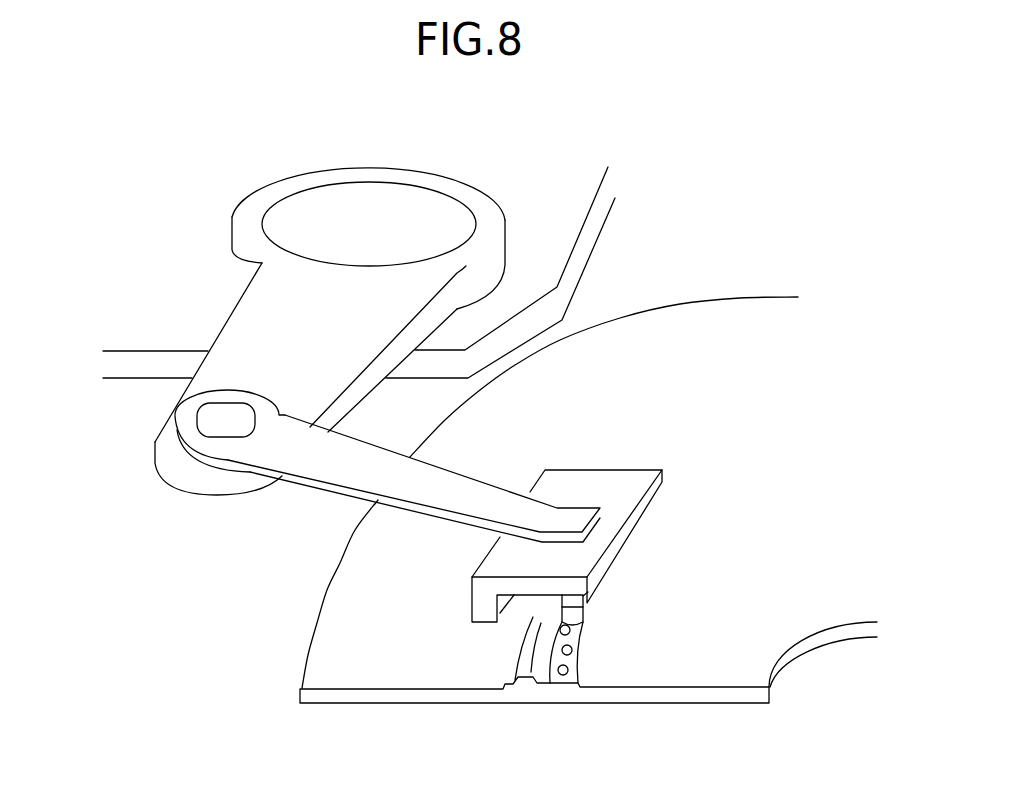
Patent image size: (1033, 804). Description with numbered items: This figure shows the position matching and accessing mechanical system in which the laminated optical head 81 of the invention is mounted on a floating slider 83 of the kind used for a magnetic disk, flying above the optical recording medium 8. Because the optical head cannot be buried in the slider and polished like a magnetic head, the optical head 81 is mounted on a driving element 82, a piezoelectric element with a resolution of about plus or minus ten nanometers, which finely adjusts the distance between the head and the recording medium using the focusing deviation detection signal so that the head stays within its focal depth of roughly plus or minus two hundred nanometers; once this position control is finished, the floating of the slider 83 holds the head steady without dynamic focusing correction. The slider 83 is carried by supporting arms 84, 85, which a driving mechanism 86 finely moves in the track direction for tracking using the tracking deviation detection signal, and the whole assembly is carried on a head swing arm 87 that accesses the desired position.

The disc base 8 is at (324, 628).
The laminated optical head 81 is at (572, 615).
The driving element 82 is at (572, 600).
The slider 83 is at (642, 518).
The arm for supporting 84 is at (463, 483).
The arm for supporting 85 is at (210, 421).
The driving mechanism 86 is at (250, 332).
The head swing arm 87 is at (438, 207).